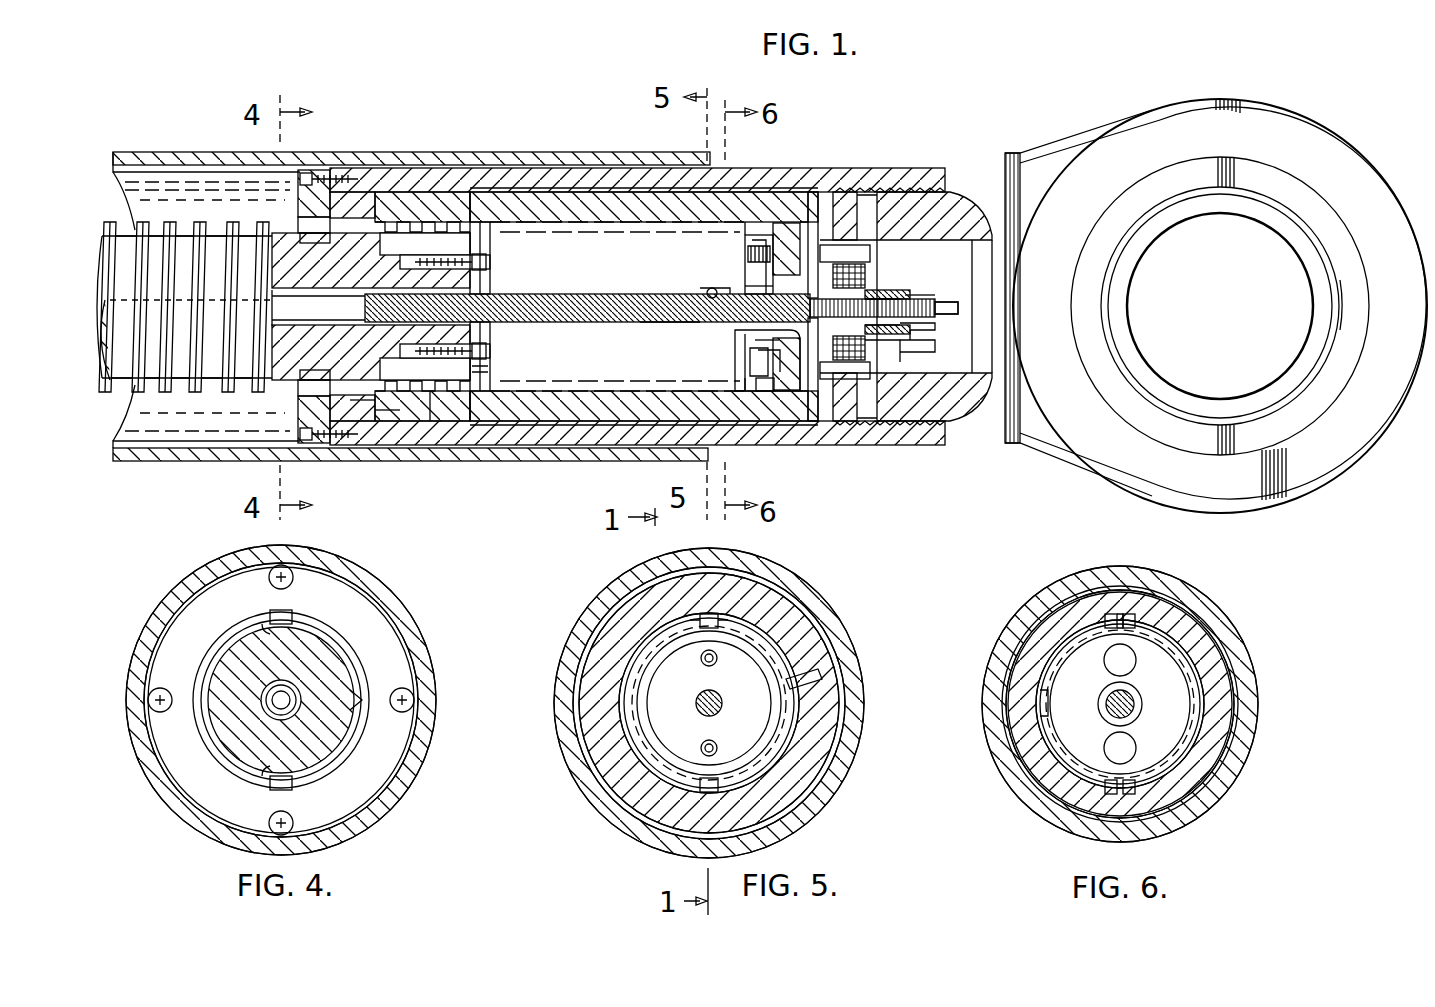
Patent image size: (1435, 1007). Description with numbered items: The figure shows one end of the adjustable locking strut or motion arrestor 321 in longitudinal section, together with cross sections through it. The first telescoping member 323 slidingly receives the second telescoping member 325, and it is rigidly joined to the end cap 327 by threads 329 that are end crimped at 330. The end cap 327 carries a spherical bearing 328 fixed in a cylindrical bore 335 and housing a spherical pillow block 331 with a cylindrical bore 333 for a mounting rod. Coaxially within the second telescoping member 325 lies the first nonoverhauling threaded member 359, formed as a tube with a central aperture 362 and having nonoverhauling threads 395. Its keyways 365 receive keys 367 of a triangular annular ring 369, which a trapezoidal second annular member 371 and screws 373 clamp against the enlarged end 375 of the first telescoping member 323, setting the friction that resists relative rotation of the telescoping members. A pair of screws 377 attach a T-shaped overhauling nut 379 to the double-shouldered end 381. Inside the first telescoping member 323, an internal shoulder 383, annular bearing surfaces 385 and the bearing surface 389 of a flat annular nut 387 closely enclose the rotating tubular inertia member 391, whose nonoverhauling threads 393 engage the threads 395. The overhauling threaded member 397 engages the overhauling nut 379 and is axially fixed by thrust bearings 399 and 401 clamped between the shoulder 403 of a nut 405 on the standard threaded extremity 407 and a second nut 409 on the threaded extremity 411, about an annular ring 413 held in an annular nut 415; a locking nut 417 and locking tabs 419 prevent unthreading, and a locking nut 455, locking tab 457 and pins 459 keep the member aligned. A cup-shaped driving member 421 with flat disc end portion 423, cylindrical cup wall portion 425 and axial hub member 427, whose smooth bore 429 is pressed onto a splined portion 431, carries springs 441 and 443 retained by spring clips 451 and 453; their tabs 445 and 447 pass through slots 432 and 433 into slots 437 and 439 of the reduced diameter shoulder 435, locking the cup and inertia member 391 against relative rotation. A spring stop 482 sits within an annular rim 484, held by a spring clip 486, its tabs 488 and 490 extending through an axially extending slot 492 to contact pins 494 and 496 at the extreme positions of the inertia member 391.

In FIG. 1, the adjustable locking strut or motion arrestor 321 is at (528, 118).
In FIG. 1, the first telescoping member 323 is at (820, 182).
In FIG. 5, the first telescoping member 323 is at (845, 640).
In FIG. 1, the second telescoping member 325 is at (192, 152).
In FIG. 1, the end cap 327 is at (1060, 160).
In FIG. 1, the spherical bearing 328 is at (1120, 172).
In FIG. 1, the threads 329 is at (893, 192).
In FIG. 1, the end crimp 330 is at (955, 192).
In FIG. 1, the spherical pillow block 331 is at (1148, 240).
In FIG. 1, the cylindrical bore 333 is at (1292, 285).
In FIG. 1, the cylindrical bore 335 is at (1368, 300).
In FIG. 1, the first nonoverhauling threaded member 359 is at (185, 395).
In FIG. 1, the central aperture 362 is at (298, 320).
In FIG. 1, the keyways 365 is at (300, 230).
In FIG. 4, the keyways 365 is at (268, 618).
In FIG. 1, the keys 367 is at (308, 240).
In FIG. 4, the keys 367 is at (288, 615).
In FIG. 1, the annular ring 369 is at (358, 192).
In FIG. 1, the second annular member 371 is at (316, 170).
In FIG. 4, the second annular member 371 is at (378, 628).
In FIG. 1, the screws 373 is at (300, 180).
In FIG. 4, the screws 373 is at (160, 688).
In FIG. 1, the enlarged end 375 is at (360, 425).
In FIG. 1, the screws 377 is at (486, 262).
In FIG. 5, the screws 377 is at (712, 664).
In FIG. 1, the overhauling nut 379 is at (505, 326).
In FIG. 5, the overhauling nut 379 is at (650, 713).
In FIG. 1, the double-shouldered end 381 is at (450, 432).
In FIG. 1, the internal shoulder 383 is at (390, 425).
In FIG. 1, the annular bearing surfaces 385 is at (440, 205).
In FIG. 1, the flat annular nut 387 is at (832, 425).
In FIG. 1, the bearing surface 389 is at (801, 423).
In FIG. 1, the tubular inertia member 391 is at (578, 200).
In FIG. 6, the tubular inertia member 391 is at (1225, 738).
In FIG. 1, the nonoverhauling threads 393 is at (465, 210).
In FIG. 1, the nonoverhauling threads 395 is at (205, 222).
In FIG. 1, the overhauling threaded member 397 is at (595, 322).
In FIG. 5, the overhauling threaded member 397 is at (727, 703).
In FIG. 1, the thrust bearing 399 is at (872, 278).
In FIG. 1, the thrust bearing 401 is at (870, 258).
In FIG. 1, the shoulder 403 is at (790, 430).
In FIG. 1, the nut 405 is at (905, 352).
In FIG. 1, the standard threaded extremity 407 is at (930, 330).
In FIG. 1, the second nut 409 is at (900, 344).
In FIG. 1, the threaded extremity 411 is at (880, 340).
In FIG. 1, the annular ring 413 is at (868, 350).
In FIG. 1, the annular nut 415 is at (860, 423).
In FIG. 1, the locking nut 417 is at (932, 296).
In FIG. 1, the locking tabs 419 is at (935, 290).
In FIG. 1, the cup-shaped driving member 421 is at (755, 266).
In FIG. 1, the flat disc end portion 423 is at (752, 258).
In FIG. 1, the cylindrical cup wall portion 425 is at (745, 240).
In FIG. 6, the cylindrical cup wall portion 425 is at (1160, 632).
In FIG. 1, the axial hub member 427 is at (742, 286).
In FIG. 1, the smooth bore 429 is at (706, 292).
In FIG. 1, the splined portion 431 is at (660, 327).
In FIG. 6, the slot 432 is at (1120, 614).
In FIG. 6, the slot 433 is at (1115, 790).
In FIG. 1, the reduced diameter shoulder 435 is at (760, 376).
In FIG. 6, the reduced diameter shoulder 435 is at (1205, 705).
In FIG. 6, the slot 437 is at (1085, 600).
In FIG. 6, the slot 439 is at (1098, 788).
In FIG. 1, the first spring 441 is at (760, 338).
In FIG. 6, the first spring 441 is at (1106, 666).
In FIG. 1, the second spring 443 is at (745, 342).
In FIG. 6, the second spring 443 is at (1101, 704).
In FIG. 1, the tabs 445 is at (784, 240).
In FIG. 6, the tabs 445 is at (1108, 615).
In FIG. 1, the tabs 447 is at (760, 386).
In FIG. 6, the tabs 447 is at (1130, 752).
In FIG. 1, the spring clip 451 is at (760, 356).
In FIG. 1, the second spring clip 453 is at (755, 366).
In FIG. 1, the locking nut 455 is at (850, 215).
In FIG. 1, the locking tab 457 is at (905, 423).
In FIG. 1, the pins 459 is at (813, 250).
In FIG. 1, the spring stop 482 is at (490, 282).
In FIG. 1, the annular rim 484 is at (470, 382).
In FIG. 1, the spring clip 486 is at (492, 372).
In FIG. 5, the tab 488 is at (722, 618).
In FIG. 5, the tab 490 is at (712, 614).
In FIG. 5, the axially extending slot 492 is at (700, 614).
In FIG. 1, the pin 494 is at (522, 192).
In FIG. 5, the pin 494 is at (608, 580).
In FIG. 1, the pin 496 is at (700, 290).
In FIG. 5, the pin 496 is at (822, 676).